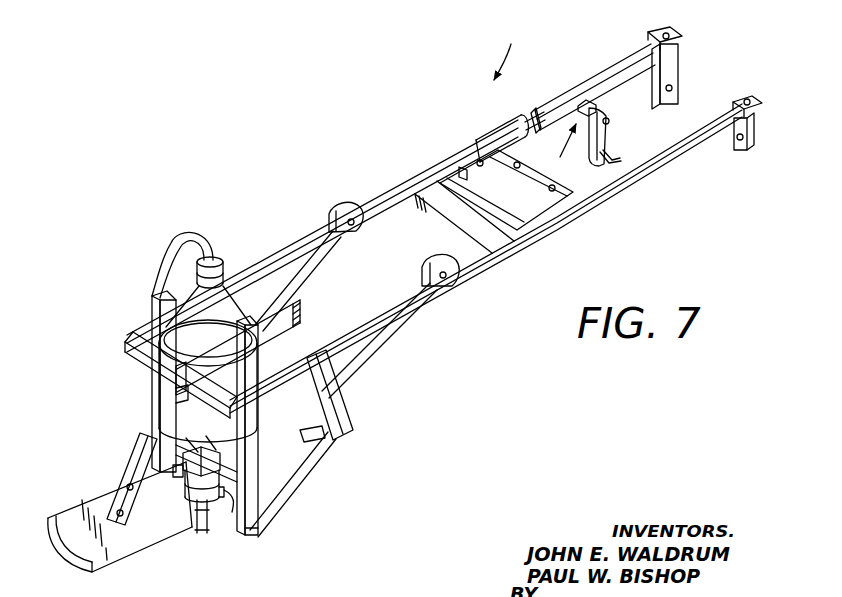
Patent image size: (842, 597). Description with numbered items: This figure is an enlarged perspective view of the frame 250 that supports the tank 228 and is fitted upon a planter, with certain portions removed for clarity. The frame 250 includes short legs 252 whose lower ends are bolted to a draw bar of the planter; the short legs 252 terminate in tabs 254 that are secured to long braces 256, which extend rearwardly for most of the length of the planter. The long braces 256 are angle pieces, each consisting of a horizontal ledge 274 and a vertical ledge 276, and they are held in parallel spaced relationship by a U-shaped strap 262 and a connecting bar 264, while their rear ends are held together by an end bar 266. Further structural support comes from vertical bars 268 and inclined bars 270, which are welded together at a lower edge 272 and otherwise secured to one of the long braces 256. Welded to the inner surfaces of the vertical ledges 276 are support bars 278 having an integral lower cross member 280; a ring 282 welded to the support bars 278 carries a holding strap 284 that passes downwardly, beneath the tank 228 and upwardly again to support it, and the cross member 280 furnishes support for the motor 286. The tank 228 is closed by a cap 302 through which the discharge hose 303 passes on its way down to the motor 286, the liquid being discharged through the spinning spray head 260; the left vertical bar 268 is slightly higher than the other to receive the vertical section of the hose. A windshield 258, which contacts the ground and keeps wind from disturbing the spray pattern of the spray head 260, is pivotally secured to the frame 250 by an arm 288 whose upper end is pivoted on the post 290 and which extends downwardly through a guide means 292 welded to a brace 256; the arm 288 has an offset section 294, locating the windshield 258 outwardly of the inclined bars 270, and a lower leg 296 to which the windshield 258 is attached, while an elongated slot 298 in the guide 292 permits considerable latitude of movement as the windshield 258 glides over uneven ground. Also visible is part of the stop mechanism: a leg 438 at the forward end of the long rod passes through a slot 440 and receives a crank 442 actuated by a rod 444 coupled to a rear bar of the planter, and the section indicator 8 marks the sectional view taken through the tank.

The section line 8- 8 is at (126, 284).
The tank 228 is at (222, 282).
The frame 250 is at (479, 56).
The short legs 252 is at (670, 72).
The tabs 254 is at (671, 36).
The long braces 256 is at (384, 194).
The windshield 258 is at (63, 537).
The spray head 260 is at (199, 510).
The U-shaped strap 262 is at (528, 172).
The connecting bar 264 is at (456, 202).
The end bar 266 is at (108, 372).
The vertical bars 268 is at (155, 297).
The inclined bars 270 is at (290, 477).
The lower edge 272 is at (255, 532).
The horizontal ledge 274 is at (462, 127).
The vertical ledge 276 is at (378, 221).
The support bars 278 is at (132, 334).
The lower cross member 280 is at (231, 497).
The ring 282 is at (157, 382).
The holding strap 284 is at (160, 392).
The motor 286 is at (183, 477).
The arms 288 is at (316, 220).
The post 290 is at (348, 212).
The guide means 292 is at (343, 431).
The offset section 294 is at (132, 443).
The lower leg 296 is at (110, 477).
The elongated slots 298 is at (350, 393).
The cap 302 is at (203, 258).
The discharge hose 303 is at (180, 253).
The leg 438 is at (602, 119).
The slot 440 is at (588, 102).
The crank 442 is at (610, 128).
The rod 444 is at (600, 148).